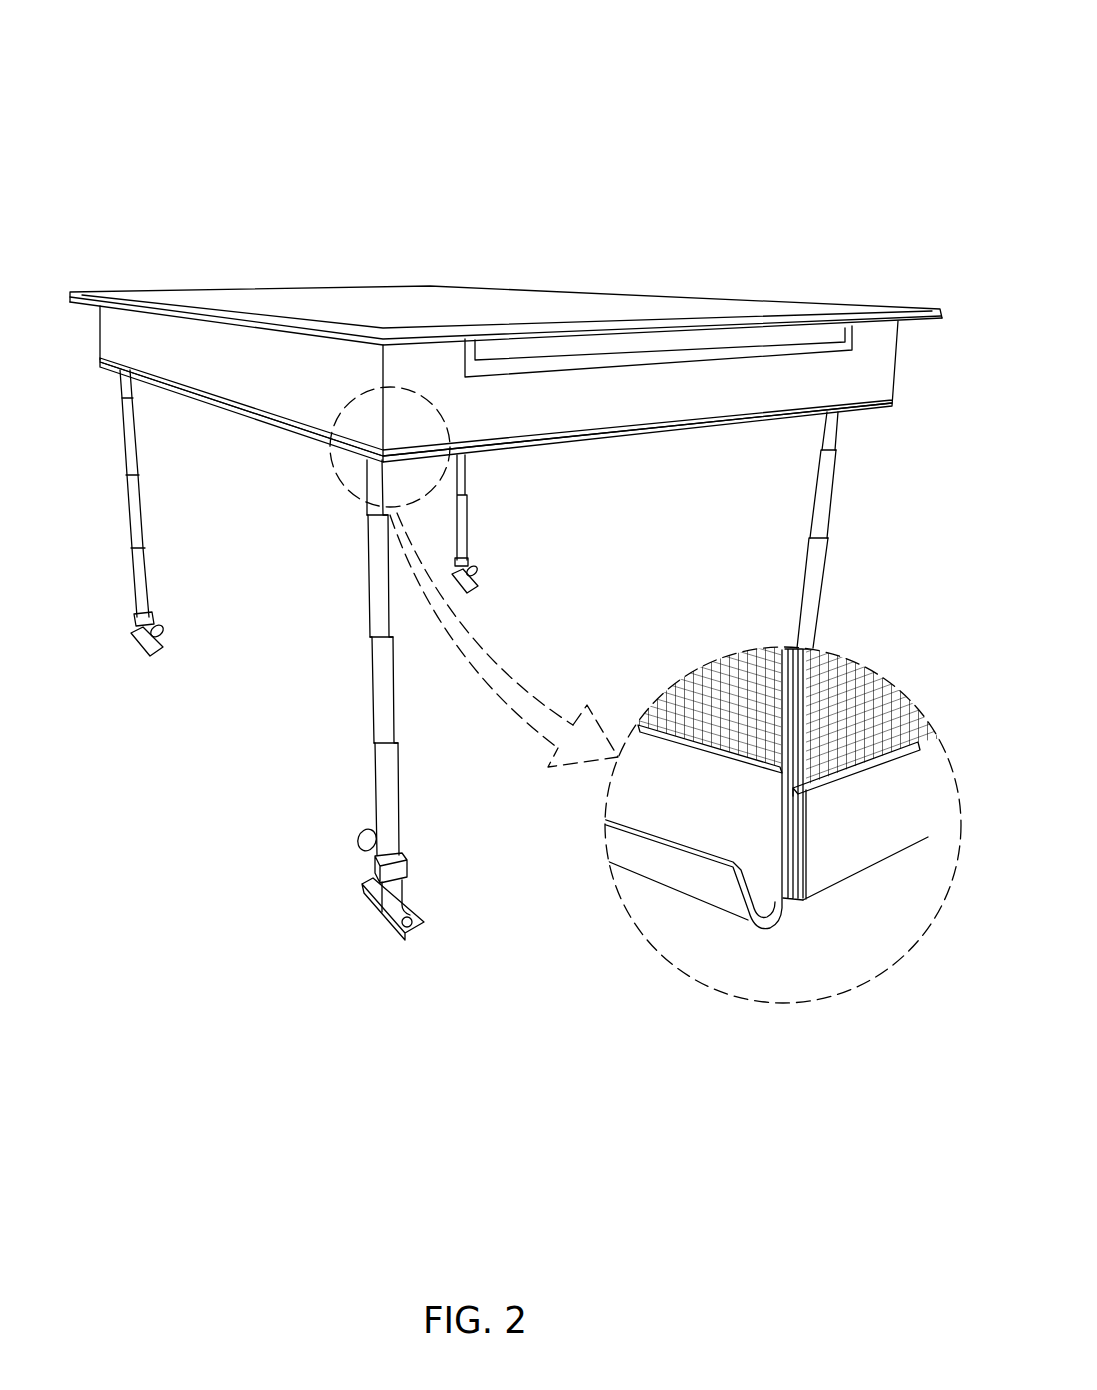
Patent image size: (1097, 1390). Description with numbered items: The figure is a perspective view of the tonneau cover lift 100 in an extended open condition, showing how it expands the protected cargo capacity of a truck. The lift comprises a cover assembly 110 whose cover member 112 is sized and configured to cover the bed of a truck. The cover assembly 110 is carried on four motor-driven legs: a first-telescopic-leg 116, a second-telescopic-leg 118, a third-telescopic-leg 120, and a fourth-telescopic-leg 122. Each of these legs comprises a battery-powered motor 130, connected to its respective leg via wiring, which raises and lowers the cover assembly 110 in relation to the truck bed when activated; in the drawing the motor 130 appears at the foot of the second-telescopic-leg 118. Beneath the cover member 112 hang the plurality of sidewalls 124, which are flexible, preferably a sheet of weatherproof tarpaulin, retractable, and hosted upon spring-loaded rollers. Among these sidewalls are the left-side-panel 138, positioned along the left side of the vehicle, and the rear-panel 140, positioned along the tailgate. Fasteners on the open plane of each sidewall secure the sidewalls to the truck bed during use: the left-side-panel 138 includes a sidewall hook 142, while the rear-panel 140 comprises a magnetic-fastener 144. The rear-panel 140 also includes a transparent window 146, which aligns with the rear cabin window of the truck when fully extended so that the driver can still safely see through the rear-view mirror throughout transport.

The tonneau cover lift 100 is at (697, 112).
The cover assembly 110 is at (736, 138).
The cover member 112 is at (448, 290).
The first-telescopic-leg 116 is at (124, 452).
The second-telescopic-leg 118 is at (367, 595).
The third-telescopic-leg 120 is at (462, 463).
The fourth-telescopic-leg 122 is at (822, 505).
The plurality of sidewalls 124 is at (290, 393).
The motor 130 is at (358, 848).
The left-side-panel 138 is at (118, 334).
The rear-panel 140 is at (886, 366).
The sidewall hook 142 is at (715, 896).
The magnetic-fastener 144 is at (835, 880).
The transparent window 146 is at (688, 352).